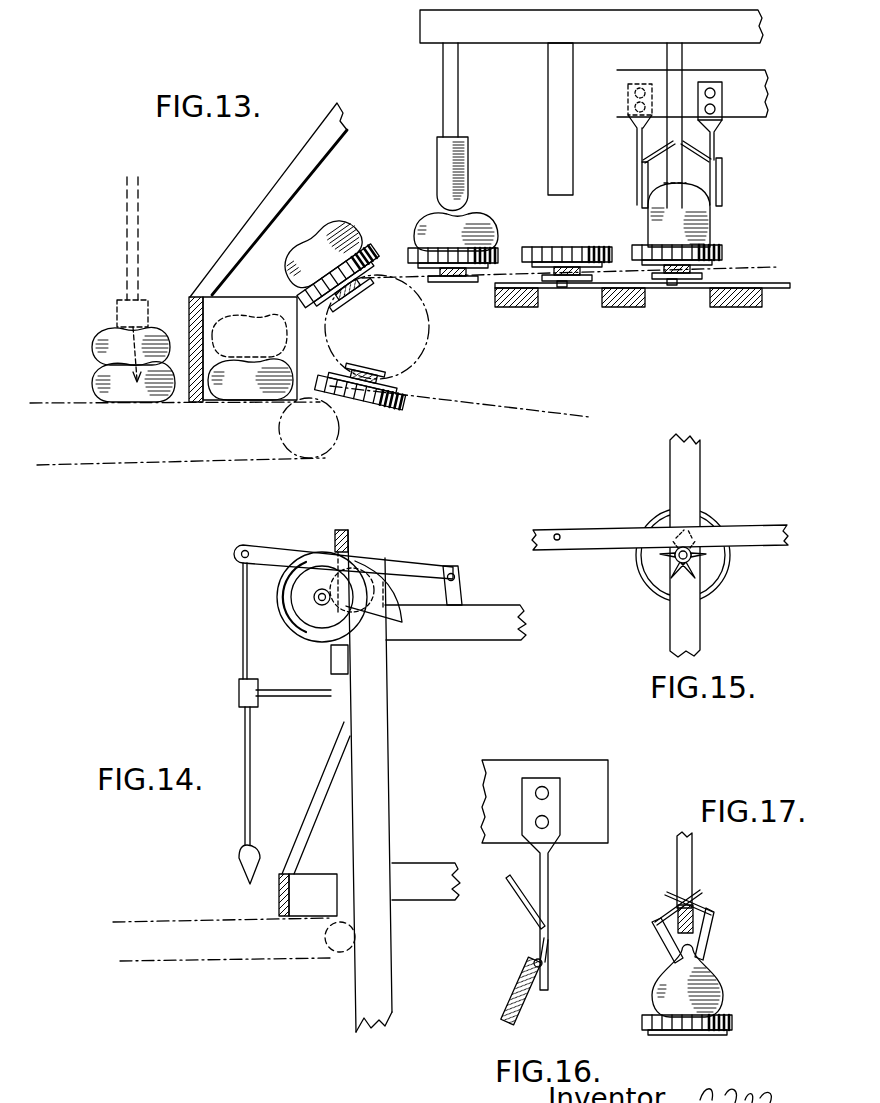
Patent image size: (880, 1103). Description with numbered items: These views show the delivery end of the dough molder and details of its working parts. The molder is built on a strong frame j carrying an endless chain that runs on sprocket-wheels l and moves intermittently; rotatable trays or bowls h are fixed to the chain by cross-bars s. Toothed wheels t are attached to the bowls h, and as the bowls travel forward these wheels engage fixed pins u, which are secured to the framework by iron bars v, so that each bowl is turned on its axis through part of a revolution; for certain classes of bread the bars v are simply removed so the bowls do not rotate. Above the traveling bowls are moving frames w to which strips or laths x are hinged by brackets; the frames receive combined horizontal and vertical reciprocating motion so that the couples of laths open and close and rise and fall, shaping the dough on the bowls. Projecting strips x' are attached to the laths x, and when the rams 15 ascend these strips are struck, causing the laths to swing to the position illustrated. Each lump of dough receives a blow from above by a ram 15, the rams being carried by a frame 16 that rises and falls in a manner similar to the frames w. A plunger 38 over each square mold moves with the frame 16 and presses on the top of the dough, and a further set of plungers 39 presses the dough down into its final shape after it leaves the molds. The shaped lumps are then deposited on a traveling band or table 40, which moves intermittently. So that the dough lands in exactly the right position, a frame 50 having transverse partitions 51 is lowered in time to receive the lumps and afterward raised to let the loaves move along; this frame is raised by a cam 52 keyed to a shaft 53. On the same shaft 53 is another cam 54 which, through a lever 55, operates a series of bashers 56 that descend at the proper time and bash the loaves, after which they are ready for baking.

In FIG. 13, the frame 16 is at (591, 26).
In FIG. 13, the plunger 38 is at (552, 112).
In FIG. 13, the plunger 39 is at (463, 192).
In FIG. 13, the ram 15 is at (679, 206).
In FIG. 17, the ram 15 is at (692, 840).
In FIG. 13, the moving frame w is at (692, 137).
In FIG. 16, the moving frame w is at (544, 875).
In FIG. 13, the projecting strip x' is at (695, 145).
In FIG. 16, the projecting strip x' is at (518, 903).
In FIG. 17, the projecting strip x' is at (677, 905).
In FIG. 13, the strip or lath x is at (680, 183).
In FIG. 16, the strip or lath x is at (514, 981).
In FIG. 17, the strip or lath x is at (689, 935).
In FIG. 13, the rotatable tray or bowl h is at (496, 256).
In FIG. 15, the rotatable tray or bowl h is at (730, 570).
In FIG. 17, the rotatable tray or bowl h is at (733, 1019).
In FIG. 13, the cross-bar s is at (580, 257).
In FIG. 15, the cross-bar s is at (685, 545).
In FIG. 13, the toothed wheel t is at (471, 283).
In FIG. 15, the toothed wheel t is at (660, 567).
In FIG. 13, the fixed pin u is at (554, 288).
In FIG. 15, the fixed pin u is at (560, 534).
In FIG. 13, the iron bar v is at (582, 289).
In FIG. 15, the iron bar v is at (592, 545).
In FIG. 13, the sprocket-wheel l is at (380, 327).
In FIG. 13, the frame 50 is at (203, 292).
In FIG. 14, the frame 50 is at (306, 824).
In FIG. 13, the transverse partition 51 is at (290, 348).
In FIG. 14, the transverse partition 51 is at (308, 895).
In FIG. 13, the traveling band or table 40 is at (214, 454).
In FIG. 14, the traveling band or table 40 is at (243, 952).
In FIG. 14, the lever 55 is at (320, 565).
In FIG. 14, the cam 52 is at (372, 580).
In FIG. 14, the cam 54 is at (281, 594).
In FIG. 14, the shaft 53 is at (320, 601).
In FIG. 14, the frame j is at (428, 781).
In FIG. 14, the basher 56 is at (243, 876).